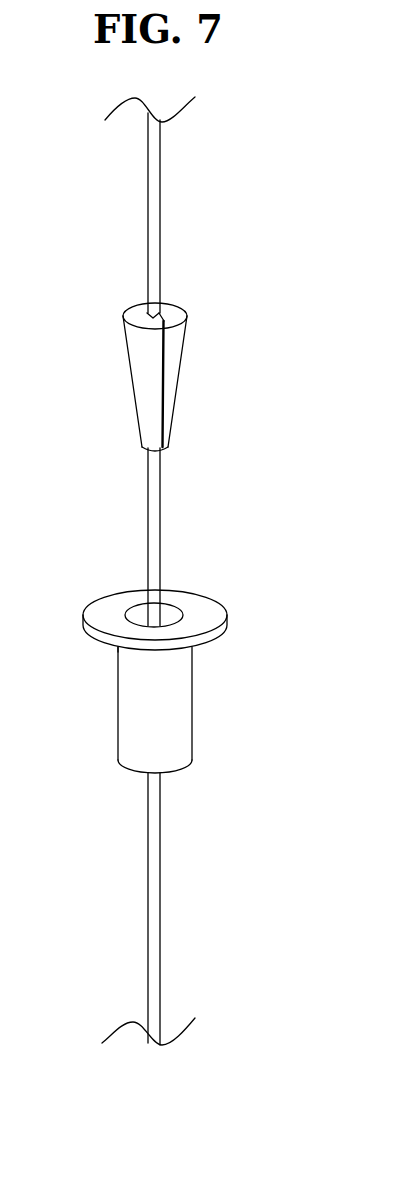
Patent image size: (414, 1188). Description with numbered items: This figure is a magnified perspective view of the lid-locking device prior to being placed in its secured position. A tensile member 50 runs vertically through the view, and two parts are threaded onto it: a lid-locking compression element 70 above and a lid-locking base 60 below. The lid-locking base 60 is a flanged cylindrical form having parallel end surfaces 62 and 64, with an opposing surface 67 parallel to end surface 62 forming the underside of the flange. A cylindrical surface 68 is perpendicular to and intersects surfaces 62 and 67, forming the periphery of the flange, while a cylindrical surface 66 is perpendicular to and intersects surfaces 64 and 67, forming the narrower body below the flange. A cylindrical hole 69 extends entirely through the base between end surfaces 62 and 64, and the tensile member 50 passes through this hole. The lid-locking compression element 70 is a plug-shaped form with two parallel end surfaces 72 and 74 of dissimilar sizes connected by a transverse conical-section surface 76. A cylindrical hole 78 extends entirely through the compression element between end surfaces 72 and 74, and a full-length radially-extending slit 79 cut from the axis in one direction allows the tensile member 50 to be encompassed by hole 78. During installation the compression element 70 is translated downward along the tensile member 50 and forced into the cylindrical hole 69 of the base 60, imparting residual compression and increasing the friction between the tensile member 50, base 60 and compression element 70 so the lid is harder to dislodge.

The tensile member 50 is at (153, 193).
The lid-locking base 60 is at (146, 710).
The end surface 62 is at (143, 630).
The end surface 64 is at (155, 775).
The cylindrical surface 66 is at (170, 731).
The parallel surface 67 is at (203, 648).
The cylindrical surface 68 is at (137, 647).
The cylindrical hole 69 is at (170, 612).
The lid-locking compression element 70 is at (148, 352).
The end surface 72 is at (138, 312).
The end surface 74 is at (147, 452).
The transverse conical-section surface 76 is at (147, 363).
The cylindrical hole 78 is at (158, 316).
The full-length radially-extending slit 79 is at (165, 373).